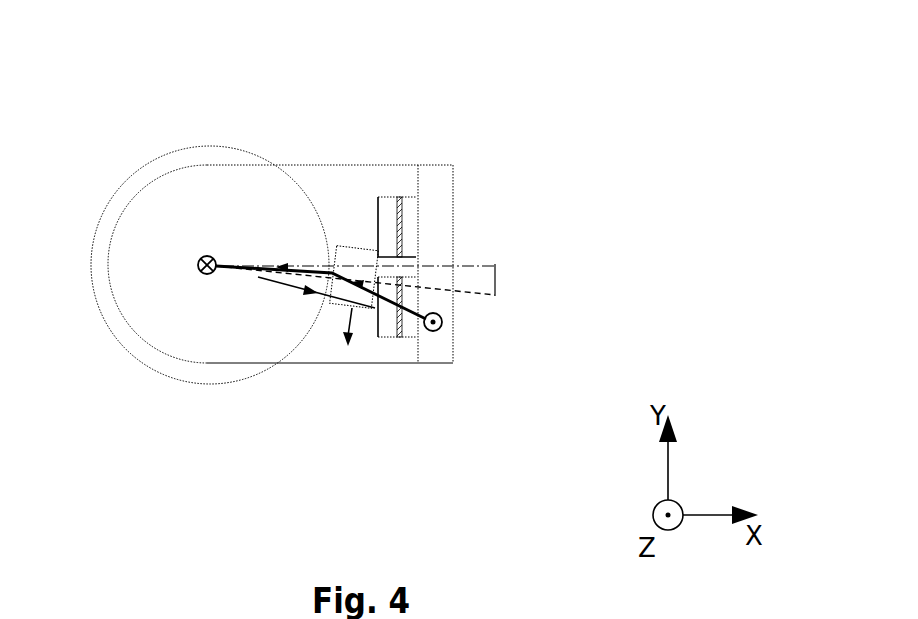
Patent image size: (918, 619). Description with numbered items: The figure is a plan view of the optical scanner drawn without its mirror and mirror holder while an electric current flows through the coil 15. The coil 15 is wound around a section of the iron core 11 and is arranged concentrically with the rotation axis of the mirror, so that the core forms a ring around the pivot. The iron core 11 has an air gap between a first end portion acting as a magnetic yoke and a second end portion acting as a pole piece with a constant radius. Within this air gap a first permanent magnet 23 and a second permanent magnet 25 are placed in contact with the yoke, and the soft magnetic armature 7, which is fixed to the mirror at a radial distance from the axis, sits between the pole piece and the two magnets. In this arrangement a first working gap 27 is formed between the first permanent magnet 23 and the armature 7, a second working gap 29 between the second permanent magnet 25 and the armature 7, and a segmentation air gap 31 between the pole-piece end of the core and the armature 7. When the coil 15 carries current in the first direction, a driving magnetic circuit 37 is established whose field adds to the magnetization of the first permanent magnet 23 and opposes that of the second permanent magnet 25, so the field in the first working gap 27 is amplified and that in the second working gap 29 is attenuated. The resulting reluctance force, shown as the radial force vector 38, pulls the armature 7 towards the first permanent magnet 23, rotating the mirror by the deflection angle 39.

The armature 7 is at (353, 255).
The iron core 11 is at (398, 347).
The coil 15 is at (220, 372).
The first permanent magnet 23 is at (415, 303).
The second permanent magnet 25 is at (407, 215).
The first working gap 27 is at (398, 275).
The second working gap 29 is at (377, 248).
The segmentation air gap 31 is at (337, 240).
The driving magnetic circuit 37 is at (440, 330).
The radial force vector 38 is at (355, 328).
The deflection angle 39 is at (472, 278).